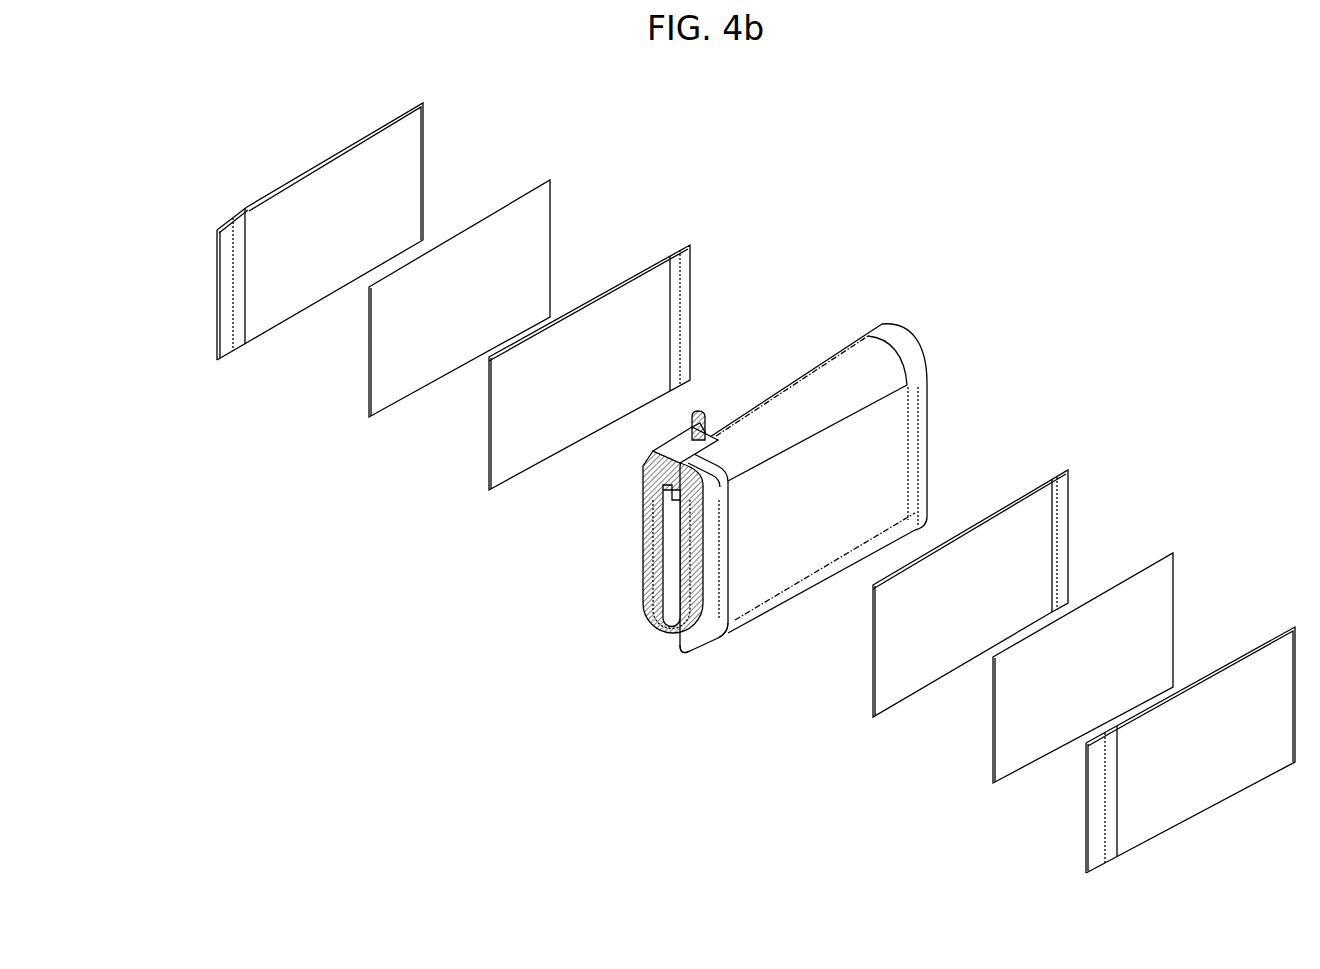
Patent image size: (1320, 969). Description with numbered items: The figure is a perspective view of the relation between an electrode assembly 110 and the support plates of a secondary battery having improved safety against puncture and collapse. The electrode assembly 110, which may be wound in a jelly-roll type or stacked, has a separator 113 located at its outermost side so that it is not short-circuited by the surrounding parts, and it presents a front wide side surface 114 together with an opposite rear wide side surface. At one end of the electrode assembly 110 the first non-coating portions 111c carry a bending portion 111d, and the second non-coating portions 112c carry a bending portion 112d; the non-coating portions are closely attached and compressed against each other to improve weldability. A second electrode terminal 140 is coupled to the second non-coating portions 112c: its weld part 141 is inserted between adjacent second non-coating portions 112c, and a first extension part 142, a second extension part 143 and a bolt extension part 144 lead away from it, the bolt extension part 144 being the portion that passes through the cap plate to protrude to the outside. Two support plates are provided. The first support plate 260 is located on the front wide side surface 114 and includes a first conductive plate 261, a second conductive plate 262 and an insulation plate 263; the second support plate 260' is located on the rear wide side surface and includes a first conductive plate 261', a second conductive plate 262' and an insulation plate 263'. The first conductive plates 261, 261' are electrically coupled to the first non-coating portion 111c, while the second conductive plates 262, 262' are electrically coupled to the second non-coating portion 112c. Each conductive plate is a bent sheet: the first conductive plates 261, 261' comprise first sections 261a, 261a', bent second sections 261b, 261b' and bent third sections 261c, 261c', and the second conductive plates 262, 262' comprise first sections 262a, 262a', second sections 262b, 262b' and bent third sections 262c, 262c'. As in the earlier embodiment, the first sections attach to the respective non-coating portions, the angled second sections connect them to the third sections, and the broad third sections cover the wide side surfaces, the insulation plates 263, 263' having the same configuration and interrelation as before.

The second support plate 260' is at (464, 285).
The second conductive plate 262' is at (291, 258).
The bent end portion of second plate (variant) 262a' is at (204, 302).
The second section 262b' is at (245, 310).
The third section 262c' is at (320, 245).
The insulation plate 263' is at (492, 297).
The first conductive plate 261' is at (629, 354).
The bent end portion of first plate (variant) 261a' is at (724, 310).
The second section 261b' is at (719, 323).
The third section 261c' is at (589, 367).
The electrode assembly 110 is at (900, 278).
The separator 113 is at (820, 394).
The front wide side surface 114 is at (790, 574).
The first non-coating portion 111c is at (905, 353).
The bending portion 111d is at (920, 428).
The second non-coating portion 112c is at (708, 647).
The bending portion 112d is at (727, 610).
The second electrode terminal 140 is at (700, 407).
The weld part 141 is at (690, 565).
The first extension part 142 is at (655, 484).
The second extension part 143 is at (676, 448).
The bolt extension part 144 is at (691, 414).
The first support plate 260 is at (1088, 685).
The first conductive plate 261 is at (1010, 581).
The bent end portion of first plate 261a is at (1102, 535).
The second section 261b is at (1099, 545).
The third section 261c is at (970, 592).
The insulation plate 263 is at (1113, 668).
The second conductive plate 262 is at (1168, 775).
The bent end portion of second plate 262a is at (1073, 818).
The second section 262b is at (1115, 825).
The third section 262c is at (1190, 761).